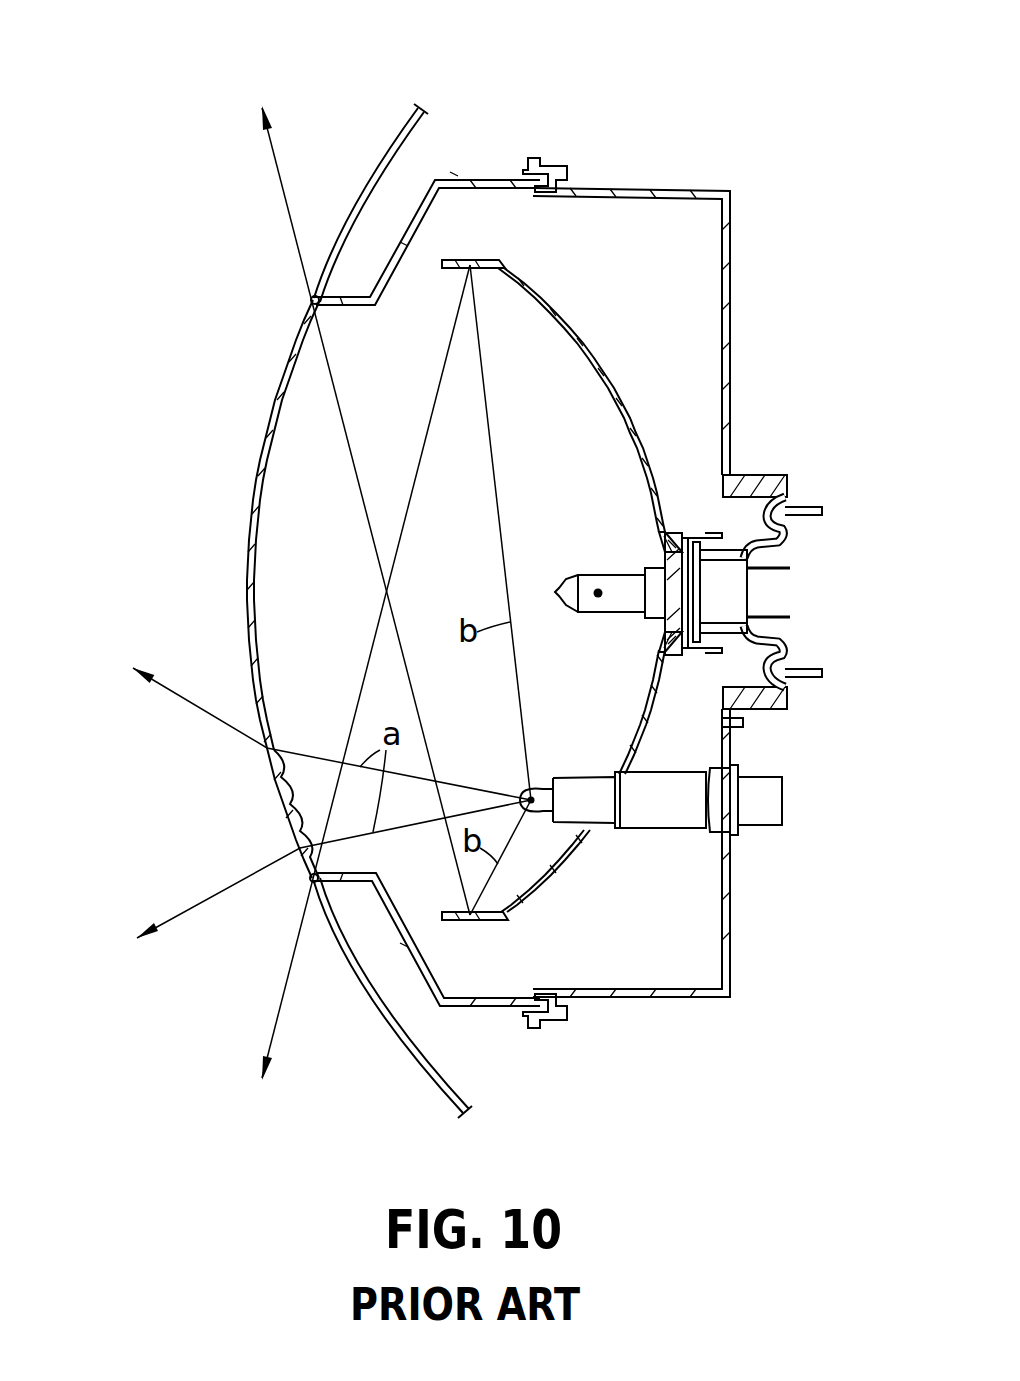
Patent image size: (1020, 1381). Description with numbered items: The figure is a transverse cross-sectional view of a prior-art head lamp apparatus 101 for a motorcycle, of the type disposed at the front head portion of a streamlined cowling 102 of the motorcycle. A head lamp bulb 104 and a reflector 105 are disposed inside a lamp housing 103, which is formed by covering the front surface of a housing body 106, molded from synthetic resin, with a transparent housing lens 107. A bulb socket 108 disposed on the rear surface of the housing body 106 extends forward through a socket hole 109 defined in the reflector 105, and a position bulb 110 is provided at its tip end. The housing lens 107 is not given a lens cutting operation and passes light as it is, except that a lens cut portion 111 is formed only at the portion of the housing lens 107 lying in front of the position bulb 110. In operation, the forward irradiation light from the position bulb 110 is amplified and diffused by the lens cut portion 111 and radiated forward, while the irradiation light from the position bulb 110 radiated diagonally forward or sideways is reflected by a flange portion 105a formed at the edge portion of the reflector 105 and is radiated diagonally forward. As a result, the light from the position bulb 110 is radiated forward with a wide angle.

The head lamp apparatus 101 is at (226, 543).
The streamlined cowling 102 is at (385, 150).
The lamp housing 103 is at (650, 52).
The head lamp bulb 104 is at (598, 573).
The reflector 105 is at (622, 388).
The flange portion 105a is at (487, 260).
The housing body 106 is at (645, 192).
The housing lens 107 is at (495, 176).
The bulb socket 108 is at (654, 829).
The socket hole 109 is at (620, 770).
The position bulb 110 is at (538, 787).
The lens cut portion 111 is at (293, 790).